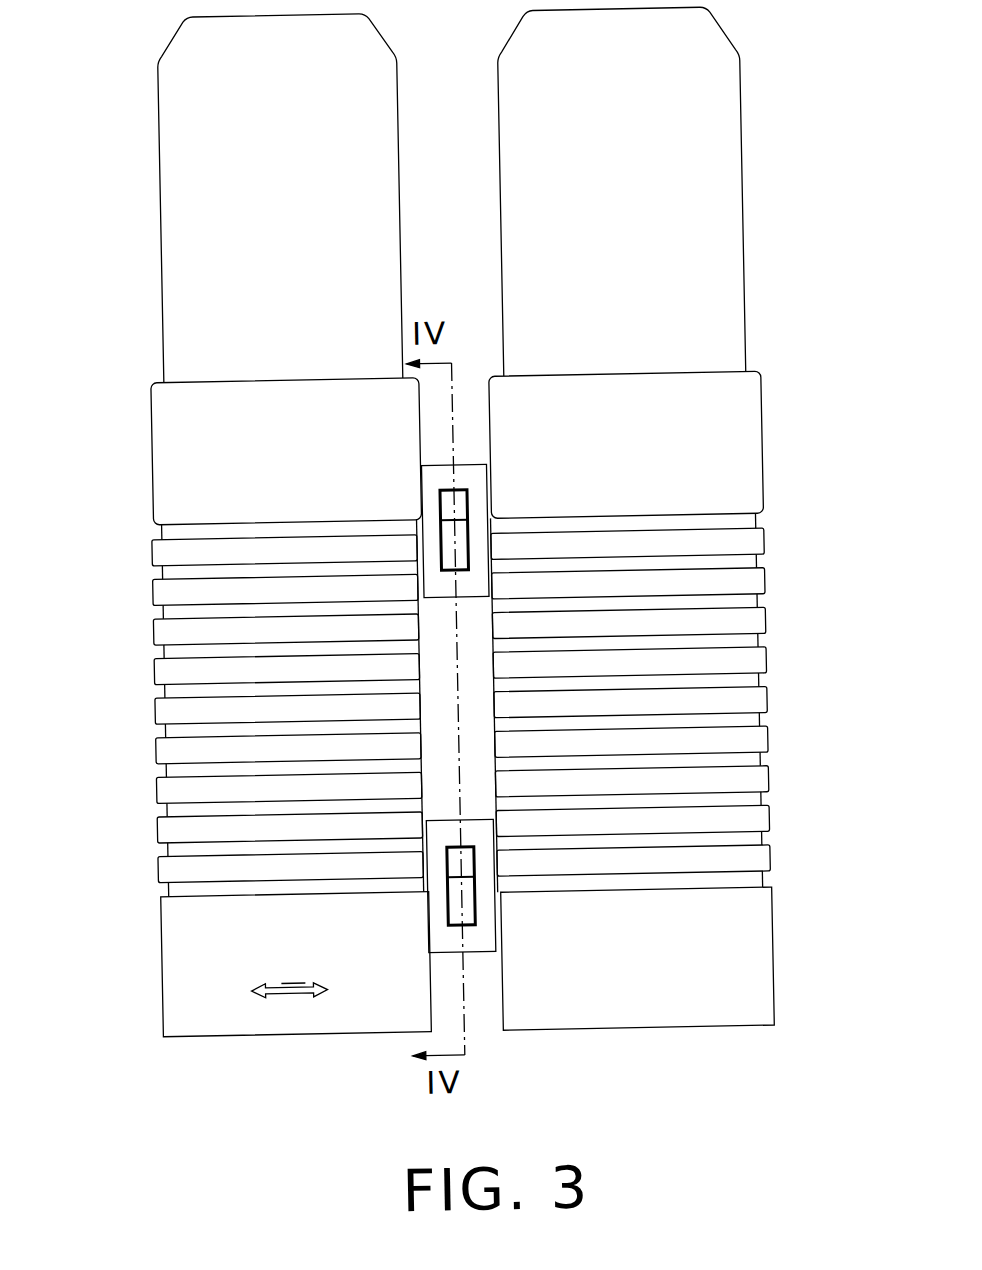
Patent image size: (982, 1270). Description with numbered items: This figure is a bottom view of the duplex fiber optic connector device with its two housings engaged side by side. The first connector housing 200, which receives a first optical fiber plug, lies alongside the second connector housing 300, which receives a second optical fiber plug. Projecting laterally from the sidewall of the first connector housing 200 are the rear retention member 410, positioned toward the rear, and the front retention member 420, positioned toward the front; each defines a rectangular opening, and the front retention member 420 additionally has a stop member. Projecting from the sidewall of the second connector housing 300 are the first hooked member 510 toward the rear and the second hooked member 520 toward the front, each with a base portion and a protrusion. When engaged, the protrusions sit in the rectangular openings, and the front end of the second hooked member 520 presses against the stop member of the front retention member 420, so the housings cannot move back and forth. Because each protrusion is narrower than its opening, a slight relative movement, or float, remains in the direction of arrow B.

The first connector housing 200 is at (222, 948).
The second connector housing 300 is at (623, 978).
The rear retention member 410 is at (442, 837).
The front retention member 420 is at (437, 482).
The first hooked member 510 is at (464, 892).
The second hooked member 520 is at (461, 543).